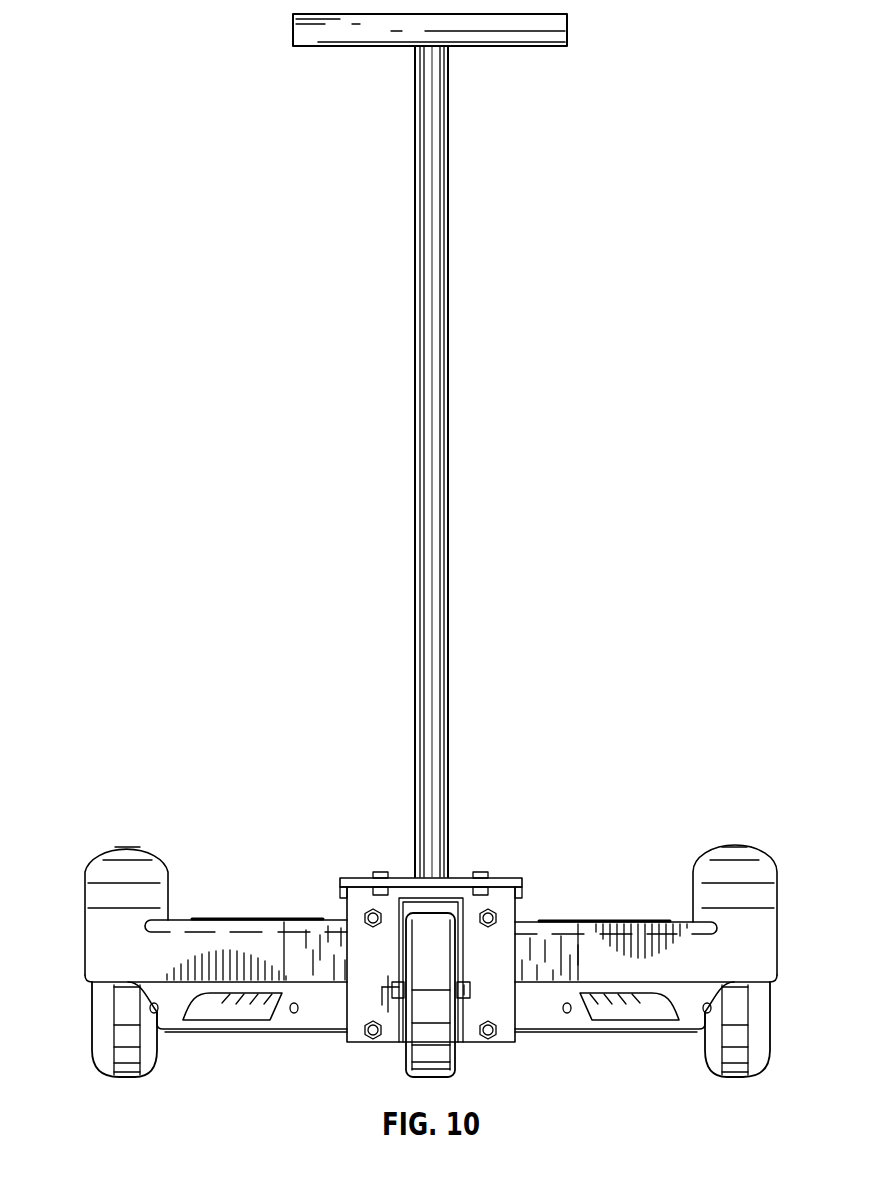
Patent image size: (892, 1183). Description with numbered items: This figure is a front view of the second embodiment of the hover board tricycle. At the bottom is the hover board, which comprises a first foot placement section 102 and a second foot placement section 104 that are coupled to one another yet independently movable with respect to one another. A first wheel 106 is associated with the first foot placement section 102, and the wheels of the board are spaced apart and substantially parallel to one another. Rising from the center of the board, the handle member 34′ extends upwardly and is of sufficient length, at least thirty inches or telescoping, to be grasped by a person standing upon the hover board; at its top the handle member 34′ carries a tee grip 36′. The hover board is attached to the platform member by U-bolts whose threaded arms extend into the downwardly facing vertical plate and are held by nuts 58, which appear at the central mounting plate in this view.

The tee grip 36′ is at (516, 47).
The handle member 34′ is at (448, 512).
The first foot placement section 102 is at (250, 920).
The second foot placement section 104 is at (628, 920).
The nuts 58 is at (364, 916).
The first wheel 106 is at (128, 1078).